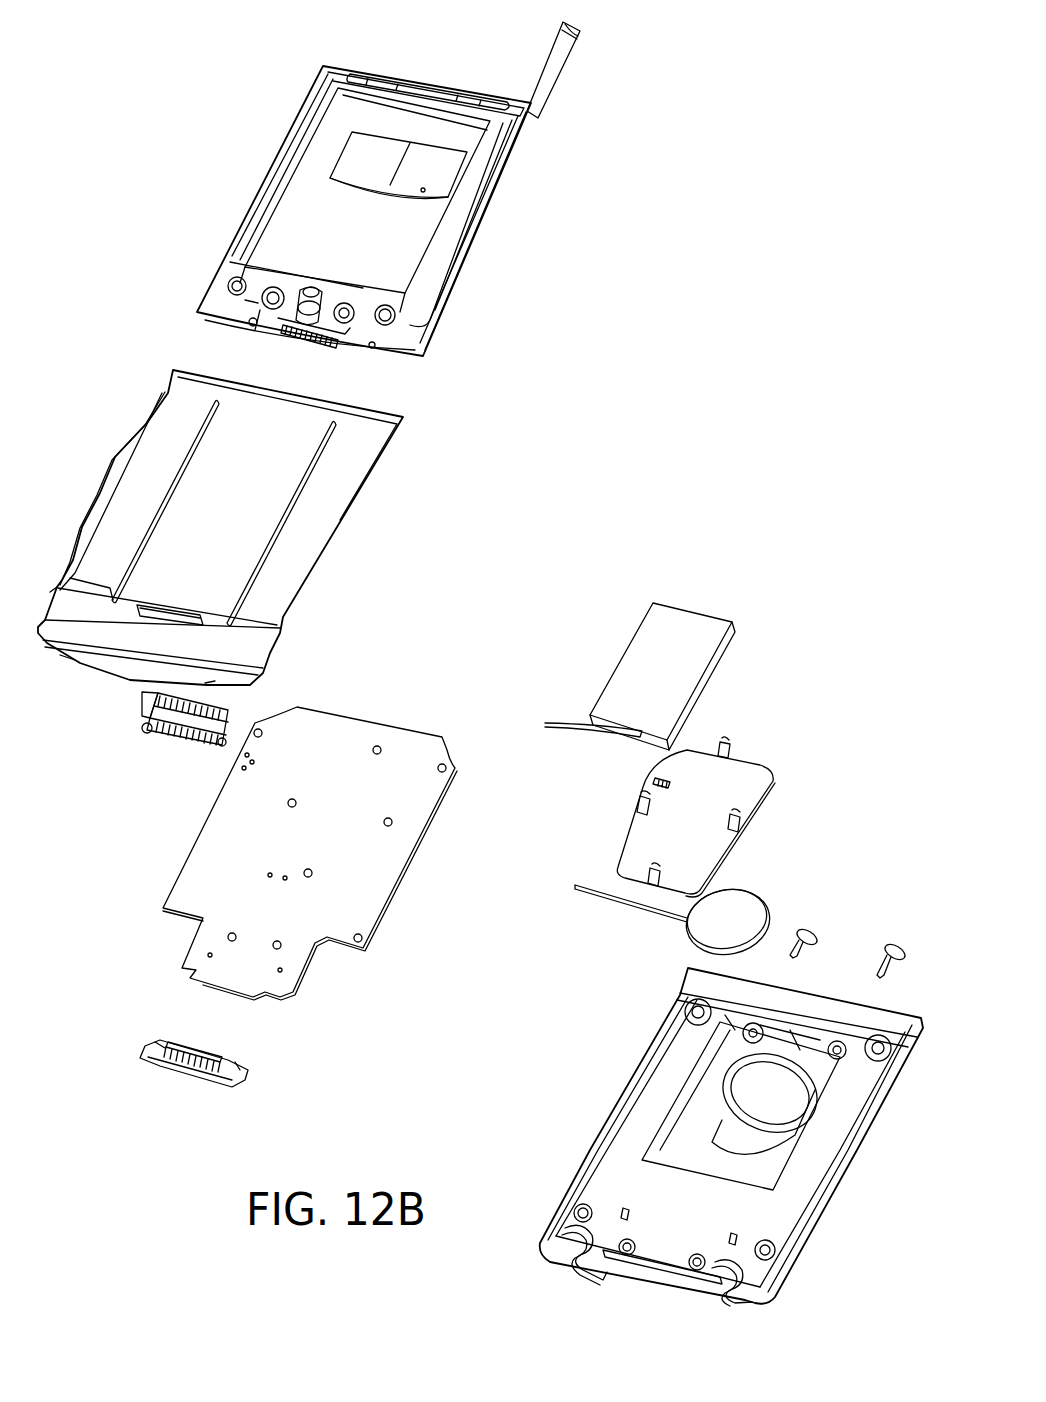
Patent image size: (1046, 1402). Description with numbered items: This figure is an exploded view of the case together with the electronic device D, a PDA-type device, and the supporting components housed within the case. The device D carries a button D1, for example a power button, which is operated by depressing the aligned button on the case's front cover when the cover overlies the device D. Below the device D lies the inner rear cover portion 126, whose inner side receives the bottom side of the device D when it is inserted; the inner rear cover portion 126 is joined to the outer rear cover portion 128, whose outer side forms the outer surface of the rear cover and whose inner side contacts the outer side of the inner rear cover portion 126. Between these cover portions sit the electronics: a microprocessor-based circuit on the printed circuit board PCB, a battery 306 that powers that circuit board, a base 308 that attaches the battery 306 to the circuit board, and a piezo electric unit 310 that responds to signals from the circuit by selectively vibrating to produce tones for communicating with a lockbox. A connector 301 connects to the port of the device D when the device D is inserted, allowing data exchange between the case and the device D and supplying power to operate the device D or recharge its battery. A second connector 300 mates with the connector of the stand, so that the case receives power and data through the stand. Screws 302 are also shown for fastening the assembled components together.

The electronic device D is at (485, 226).
The button D1 is at (387, 323).
The inner rear cover portion 126 is at (380, 462).
The second connector 300 is at (142, 737).
The printed circuit board PCB is at (172, 913).
The connector 301 is at (185, 1077).
The battery 306 is at (715, 675).
The base 308 is at (770, 792).
The piezo electric unit 310 is at (770, 903).
The screws 302 is at (897, 943).
The outer rear cover portion 128 is at (592, 1147).